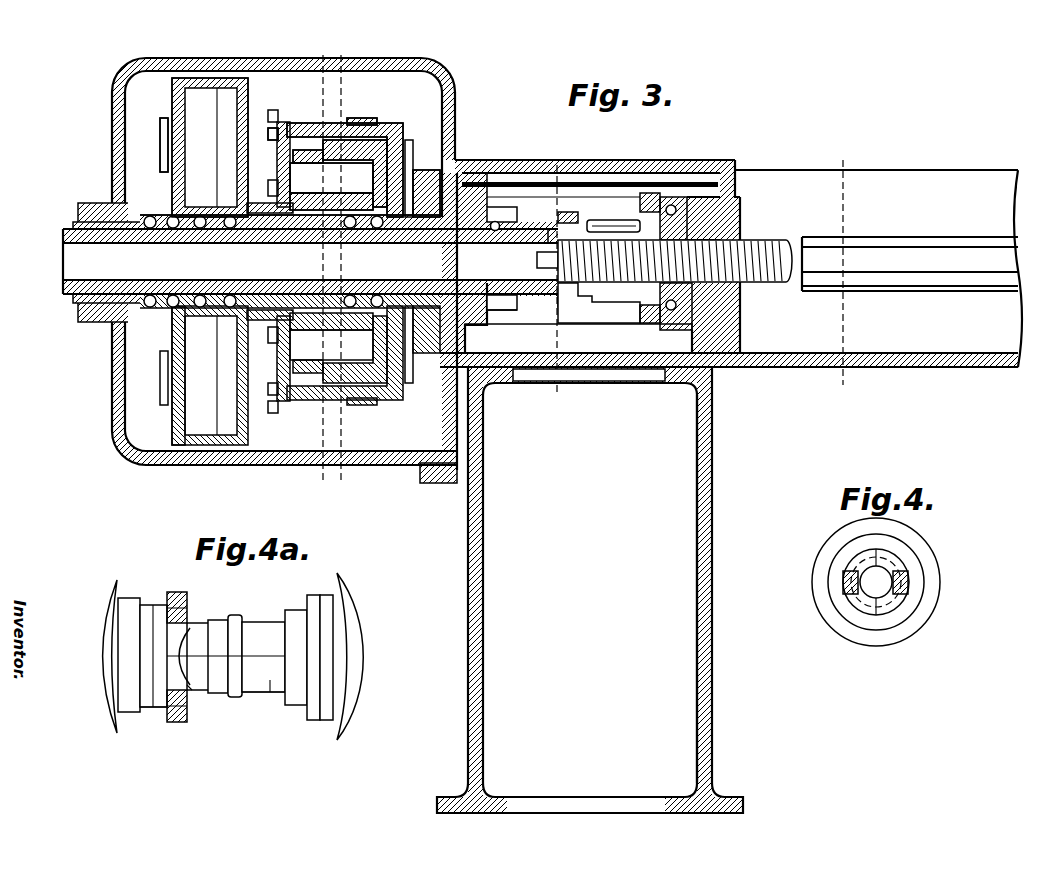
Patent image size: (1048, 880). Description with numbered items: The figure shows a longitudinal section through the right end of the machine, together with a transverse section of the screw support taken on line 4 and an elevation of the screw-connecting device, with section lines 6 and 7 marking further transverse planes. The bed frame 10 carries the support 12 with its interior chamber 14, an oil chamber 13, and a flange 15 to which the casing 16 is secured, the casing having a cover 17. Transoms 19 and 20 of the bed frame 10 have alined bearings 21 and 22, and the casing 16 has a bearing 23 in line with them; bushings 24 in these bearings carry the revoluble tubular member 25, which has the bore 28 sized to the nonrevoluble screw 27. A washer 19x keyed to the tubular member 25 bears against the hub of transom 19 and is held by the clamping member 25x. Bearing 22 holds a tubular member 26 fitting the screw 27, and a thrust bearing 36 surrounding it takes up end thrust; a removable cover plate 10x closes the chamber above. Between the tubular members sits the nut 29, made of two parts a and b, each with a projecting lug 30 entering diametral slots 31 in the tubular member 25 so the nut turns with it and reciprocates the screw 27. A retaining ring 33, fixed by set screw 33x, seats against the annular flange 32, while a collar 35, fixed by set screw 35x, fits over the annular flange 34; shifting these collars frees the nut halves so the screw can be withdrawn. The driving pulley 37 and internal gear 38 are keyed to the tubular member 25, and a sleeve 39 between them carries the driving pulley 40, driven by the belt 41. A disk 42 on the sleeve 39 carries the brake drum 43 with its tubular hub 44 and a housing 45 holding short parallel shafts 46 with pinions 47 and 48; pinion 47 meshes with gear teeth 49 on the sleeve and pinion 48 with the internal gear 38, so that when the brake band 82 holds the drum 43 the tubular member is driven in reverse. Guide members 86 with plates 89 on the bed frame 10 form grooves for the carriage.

In FIG. 3, the section line 4 is at (553, 402).
In FIG. 3, the section line 6 is at (314, 499).
In FIG. 3, the section line 7 is at (350, 499).
In FIG. 3, the bed frame 10 is at (935, 367).
In FIG. 3, the cover plate 10x is at (606, 168).
In FIG. 3, the support 12 is at (468, 633).
In FIG. 3, the oil chamber 13 is at (859, 162).
In FIG. 3, the interior chamber 14 is at (688, 690).
In FIG. 3, the flange 15 is at (444, 485).
In FIG. 3, the casing 16 is at (160, 467).
In FIG. 3, the cover 17 is at (112, 88).
In FIG. 3, the transom 19 is at (470, 333).
In FIG. 4A, the transom 19 is at (112, 592).
In FIG. 3, the washer 19x is at (497, 308).
In FIG. 4A, the washer 19x is at (150, 603).
In FIG. 3, the transom 20 is at (740, 330).
In FIG. 4A, the transom 20 is at (358, 628).
In FIG. 3, the bearing 21 is at (472, 200).
In FIG. 4A, the bearing 21 is at (126, 660).
In FIG. 3, the bearing 22 is at (738, 203).
In FIG. 3, the bearing 23 is at (102, 201).
In FIG. 3, the bushings 24 is at (74, 226).
In FIG. 3, the revoluble tubular member 25 is at (74, 297).
In FIG. 3, the clamping member 25x is at (517, 302).
In FIG. 4A, the clamping member 25x is at (158, 707).
In FIG. 3, the tubular member 26 is at (740, 228).
In FIG. 3, the nonrevoluble screw 27 is at (776, 242).
In FIG. 3, the bore 28 is at (105, 254).
In FIG. 3, the nut 29 is at (606, 302).
In FIG. 4, the nut 29 is at (858, 612).
In FIG. 4A, the nut 29 is at (258, 694).
In FIG. 3, the projecting lug 30 is at (537, 262).
In FIG. 4, the projecting lug 30 is at (908, 582).
In FIG. 4A, the projecting lug 30 is at (195, 656).
In FIG. 3, the diametral slots 31 is at (545, 232).
In FIG. 4A, the diametral slots 31 is at (210, 620).
In FIG. 3, the annular flange 32 is at (600, 220).
In FIG. 4A, the annular flange 32 is at (236, 615).
In FIG. 3, the retaining ring 33 is at (577, 207).
In FIG. 4, the retaining ring 33 is at (888, 622).
In FIG. 4A, the retaining ring 33 is at (195, 690).
In FIG. 4, the set screw 33x is at (850, 555).
In FIG. 3, the annular flange 34 is at (640, 315).
In FIG. 4A, the annular flange 34 is at (296, 706).
In FIG. 3, the retaining ring 35 is at (652, 365).
In FIG. 4, the retaining ring 35 is at (838, 540).
In FIG. 4A, the retaining ring 35 is at (178, 592).
In FIG. 4, the set screw 35x is at (910, 605).
In FIG. 3, the thrust bearing 36 is at (668, 198).
In FIG. 4A, the thrust bearing 36 is at (326, 595).
In FIG. 3, the driving pulley 37 is at (176, 372).
In FIG. 3, the internal gear 38 is at (455, 140).
In FIG. 3, the sleeve 39 is at (170, 310).
In FIG. 3, the driving pulley 40 is at (215, 447).
In FIG. 3, the belt 41 is at (297, 57).
In FIG. 3, the disk 42 is at (277, 158).
In FIG. 3, the brake drum 43 is at (400, 126).
In FIG. 3, the tubular hub 44 is at (420, 213).
In FIG. 3, the housing 45 is at (400, 385).
In FIG. 3, the short parallel shafts 46 is at (290, 178).
In FIG. 3, the pinion 47 is at (310, 148).
In FIG. 3, the pinion 48 is at (380, 125).
In FIG. 3, the gear teeth 49 is at (160, 140).
In FIG. 3, the brake band 82 is at (358, 118).
In FIG. 3, the guide members 86 is at (1008, 284).
In FIG. 3, the plates 89 is at (1008, 241).
In FIG. 3, the nut part a is at (614, 213).
In FIG. 4, the nut part a is at (858, 570).
In FIG. 4A, the nut part a is at (260, 622).
In FIG. 4, the nut part b is at (890, 562).
In FIG. 4A, the nut part b is at (269, 698).